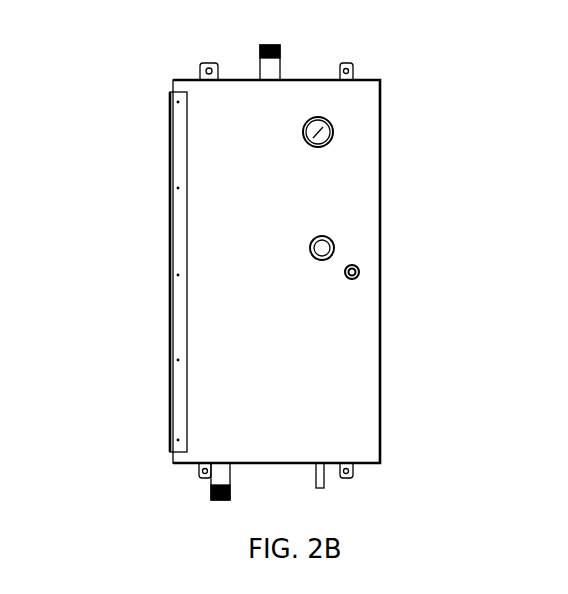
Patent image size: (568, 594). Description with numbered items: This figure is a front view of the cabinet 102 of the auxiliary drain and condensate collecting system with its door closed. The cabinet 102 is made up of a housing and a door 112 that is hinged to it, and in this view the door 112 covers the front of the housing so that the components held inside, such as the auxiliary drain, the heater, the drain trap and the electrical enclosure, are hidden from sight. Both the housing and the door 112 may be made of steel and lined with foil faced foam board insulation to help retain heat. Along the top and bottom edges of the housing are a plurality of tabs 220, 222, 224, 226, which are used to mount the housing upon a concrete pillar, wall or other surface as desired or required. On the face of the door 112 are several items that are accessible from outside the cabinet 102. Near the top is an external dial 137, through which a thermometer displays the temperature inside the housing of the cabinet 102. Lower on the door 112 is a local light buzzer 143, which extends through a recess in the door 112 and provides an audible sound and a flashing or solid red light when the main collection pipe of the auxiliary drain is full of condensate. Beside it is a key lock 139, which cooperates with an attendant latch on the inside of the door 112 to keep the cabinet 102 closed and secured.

The cabinet 102 is at (265, 259).
The door 112 is at (307, 395).
The external dial 137 is at (353, 125).
The key lock 139 is at (363, 261).
The local light buzzer 143 is at (333, 236).
The tab 220 is at (193, 58).
The tab 222 is at (370, 47).
The tab 224 is at (190, 473).
The tab 226 is at (385, 482).